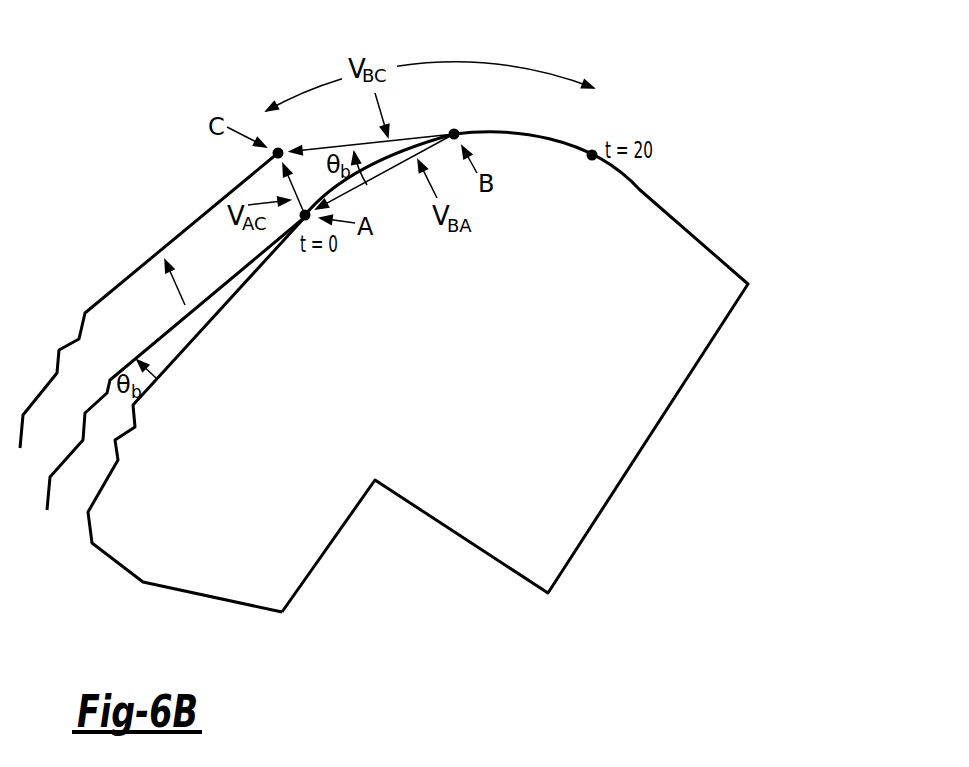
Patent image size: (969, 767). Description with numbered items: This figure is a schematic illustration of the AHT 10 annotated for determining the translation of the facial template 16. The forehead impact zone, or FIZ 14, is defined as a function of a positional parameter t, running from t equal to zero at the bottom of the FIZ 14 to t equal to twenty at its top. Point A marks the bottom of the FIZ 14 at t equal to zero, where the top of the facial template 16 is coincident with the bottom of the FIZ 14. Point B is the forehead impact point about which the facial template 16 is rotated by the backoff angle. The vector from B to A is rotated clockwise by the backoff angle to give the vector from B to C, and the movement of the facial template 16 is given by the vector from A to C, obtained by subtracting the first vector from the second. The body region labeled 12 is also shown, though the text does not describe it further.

The AHT 10 is at (413, 319).
The blade body 12 is at (628, 313).
The forehead impact zone 14 is at (430, 69).
The facial template 16 is at (218, 515).